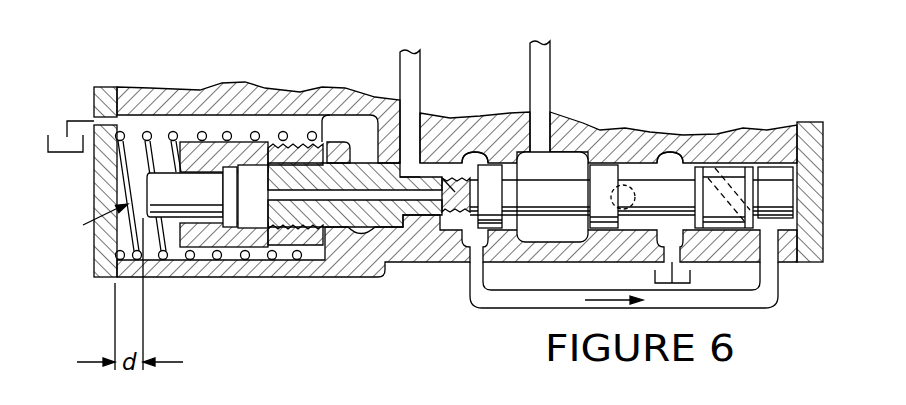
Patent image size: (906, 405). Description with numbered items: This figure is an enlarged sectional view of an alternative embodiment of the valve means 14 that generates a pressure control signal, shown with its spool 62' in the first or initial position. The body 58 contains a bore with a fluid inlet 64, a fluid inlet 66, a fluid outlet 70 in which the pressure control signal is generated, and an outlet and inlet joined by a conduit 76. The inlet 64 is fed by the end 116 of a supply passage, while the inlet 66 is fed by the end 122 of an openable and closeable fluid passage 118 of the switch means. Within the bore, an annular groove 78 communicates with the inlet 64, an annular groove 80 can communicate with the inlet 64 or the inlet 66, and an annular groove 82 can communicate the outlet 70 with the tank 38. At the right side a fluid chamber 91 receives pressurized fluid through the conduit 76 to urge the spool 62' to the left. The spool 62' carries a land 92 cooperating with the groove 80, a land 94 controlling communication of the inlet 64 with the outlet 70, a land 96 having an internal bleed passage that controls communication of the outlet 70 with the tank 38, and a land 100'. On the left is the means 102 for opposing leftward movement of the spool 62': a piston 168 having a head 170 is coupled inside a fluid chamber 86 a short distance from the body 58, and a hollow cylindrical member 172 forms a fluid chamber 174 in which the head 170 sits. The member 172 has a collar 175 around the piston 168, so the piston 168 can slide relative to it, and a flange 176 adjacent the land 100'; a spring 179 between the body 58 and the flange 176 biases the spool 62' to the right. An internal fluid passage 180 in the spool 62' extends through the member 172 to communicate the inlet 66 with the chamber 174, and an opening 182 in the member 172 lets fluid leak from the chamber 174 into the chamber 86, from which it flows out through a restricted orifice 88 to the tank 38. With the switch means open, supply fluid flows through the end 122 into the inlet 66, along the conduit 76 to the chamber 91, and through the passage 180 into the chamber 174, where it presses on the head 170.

The second valve means 14 is at (500, 56).
The tank 38 is at (75, 157).
The body 58 is at (100, 87).
The spool 62' is at (631, 156).
The fluid inlet 64 is at (547, 143).
The fluid inlet 66 is at (458, 150).
The fluid outlet 70 is at (647, 143).
The conduit 76 is at (513, 310).
The annular groove 78 is at (535, 233).
The annular groove 80 is at (472, 143).
The annular groove 82 is at (672, 163).
The fluid chamber 86 is at (195, 123).
The restricted orifice 88 is at (95, 120).
The fluid chamber 91 is at (773, 173).
The land 92 is at (503, 193).
The land 94 is at (608, 213).
The land 96 is at (731, 160).
The land 100' is at (293, 269).
The means for controlling or opposing movement of the spool 102 is at (85, 224).
The end of fluid passage 116 is at (545, 58).
The openable and closeable fluid passage 118 is at (413, 65).
The end of fluid passage 122 is at (413, 145).
The piston 168 is at (177, 198).
The head 170 is at (230, 165).
The hollow cylindrical member 172 is at (286, 262).
The fluid chamber 174 is at (247, 220).
The collar 175 is at (208, 237).
The flange 176 is at (323, 148).
The spring 179 is at (148, 132).
The internal fluid passage 180 is at (410, 200).
The opening 182 is at (235, 250).